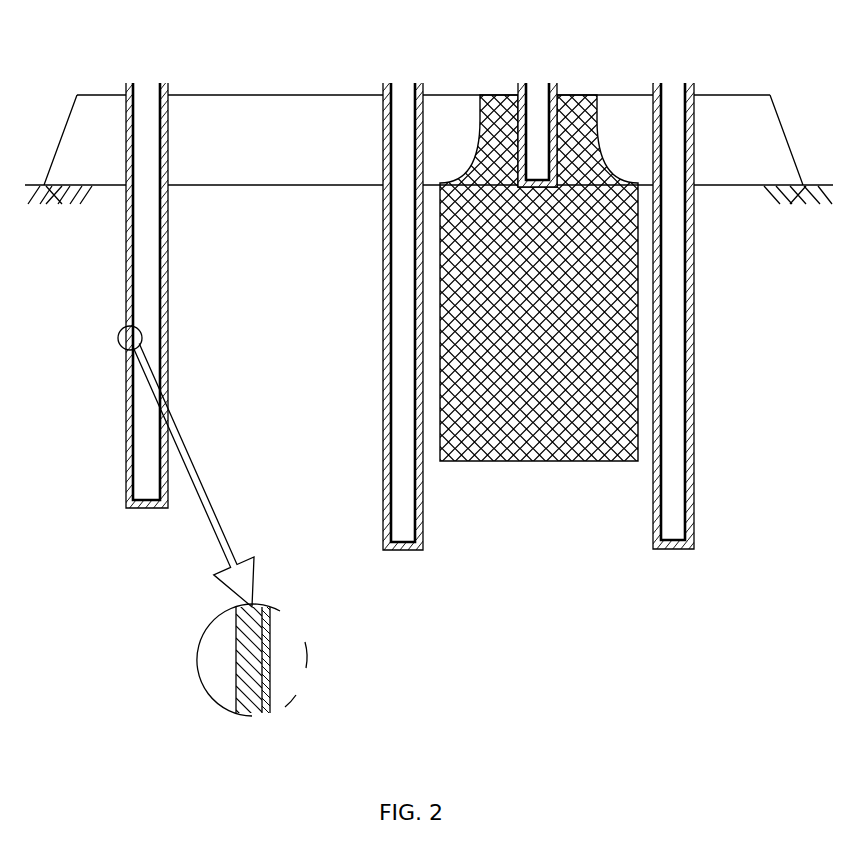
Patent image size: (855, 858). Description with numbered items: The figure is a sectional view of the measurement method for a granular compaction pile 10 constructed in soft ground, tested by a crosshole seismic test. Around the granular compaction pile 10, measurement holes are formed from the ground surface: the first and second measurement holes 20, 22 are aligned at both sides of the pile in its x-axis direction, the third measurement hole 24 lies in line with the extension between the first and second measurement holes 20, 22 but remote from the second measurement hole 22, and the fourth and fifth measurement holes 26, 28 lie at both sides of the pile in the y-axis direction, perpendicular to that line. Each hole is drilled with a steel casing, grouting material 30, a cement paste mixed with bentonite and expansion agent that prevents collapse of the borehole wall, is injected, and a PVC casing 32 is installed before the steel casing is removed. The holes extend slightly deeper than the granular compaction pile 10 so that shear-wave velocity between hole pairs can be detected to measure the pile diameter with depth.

The granular compaction pile 10 is at (590, 93).
The first measurement hole 20 is at (682, 115).
The second measurement hole 22 is at (393, 115).
The third measurement hole 24 is at (137, 115).
The fourth measurement hole 26 is at (525, 110).
The fifth measurement hole 28 is at (532, 115).
The grouting material 30 is at (240, 638).
The casing 32 is at (162, 83).